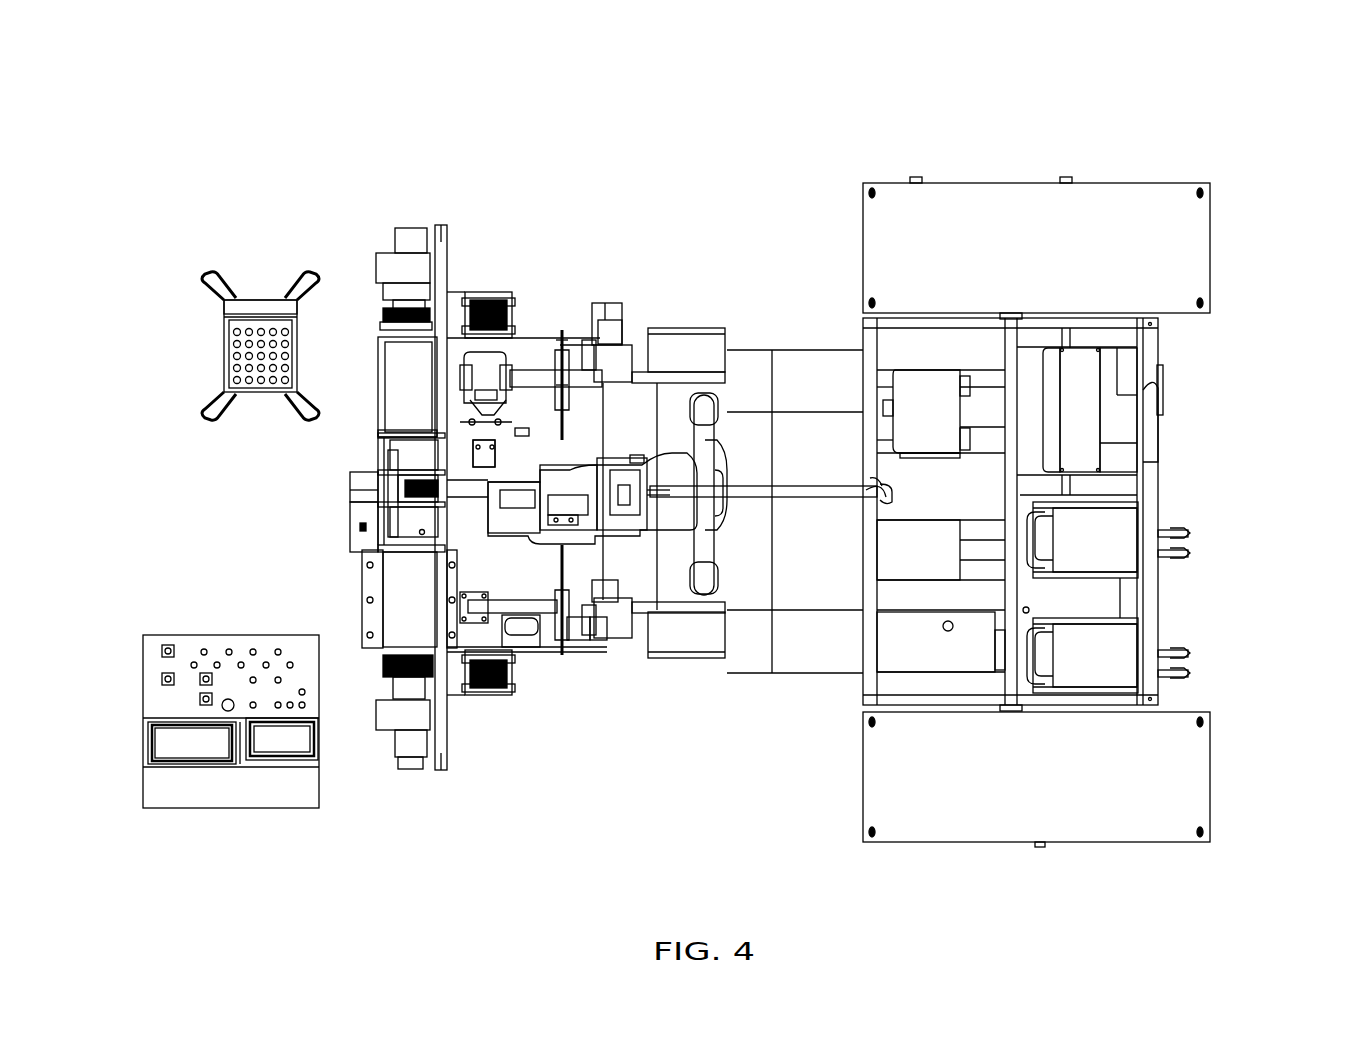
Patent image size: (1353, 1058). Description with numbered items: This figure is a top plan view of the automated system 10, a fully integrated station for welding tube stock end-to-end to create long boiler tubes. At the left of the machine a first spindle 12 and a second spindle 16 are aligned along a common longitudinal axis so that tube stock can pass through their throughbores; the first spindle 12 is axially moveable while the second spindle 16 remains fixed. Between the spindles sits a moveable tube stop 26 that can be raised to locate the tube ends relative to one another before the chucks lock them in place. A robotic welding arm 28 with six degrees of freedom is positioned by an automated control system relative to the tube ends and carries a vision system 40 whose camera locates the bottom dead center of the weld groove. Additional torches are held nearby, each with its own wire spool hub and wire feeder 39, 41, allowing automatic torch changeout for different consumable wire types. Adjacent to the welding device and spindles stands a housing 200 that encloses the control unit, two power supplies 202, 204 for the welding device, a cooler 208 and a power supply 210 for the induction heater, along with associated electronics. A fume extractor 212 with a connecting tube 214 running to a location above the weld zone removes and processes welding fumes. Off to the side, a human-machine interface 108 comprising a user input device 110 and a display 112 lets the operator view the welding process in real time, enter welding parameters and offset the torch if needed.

The system 10 is at (663, 100).
The first spindle 12 is at (400, 360).
The second spindle 16 is at (408, 600).
The tube stop 26 is at (355, 490).
The robotic welding arm 28 is at (573, 483).
The wire spool hub and wire feeder 39 is at (614, 618).
The vision system 40 is at (510, 523).
The wire spool hub and wire feeder 41 is at (628, 340).
The human-machine interface 108 is at (122, 277).
The user input device 110 is at (216, 635).
The display 112 is at (275, 748).
The housing 200 is at (1233, 338).
The power supply 202 is at (1105, 540).
The power supply 204 is at (1110, 660).
The cooler 208 is at (903, 650).
The power supply 210 is at (885, 566).
The fume extractor 212 is at (928, 402).
The connecting tube 214 is at (768, 490).